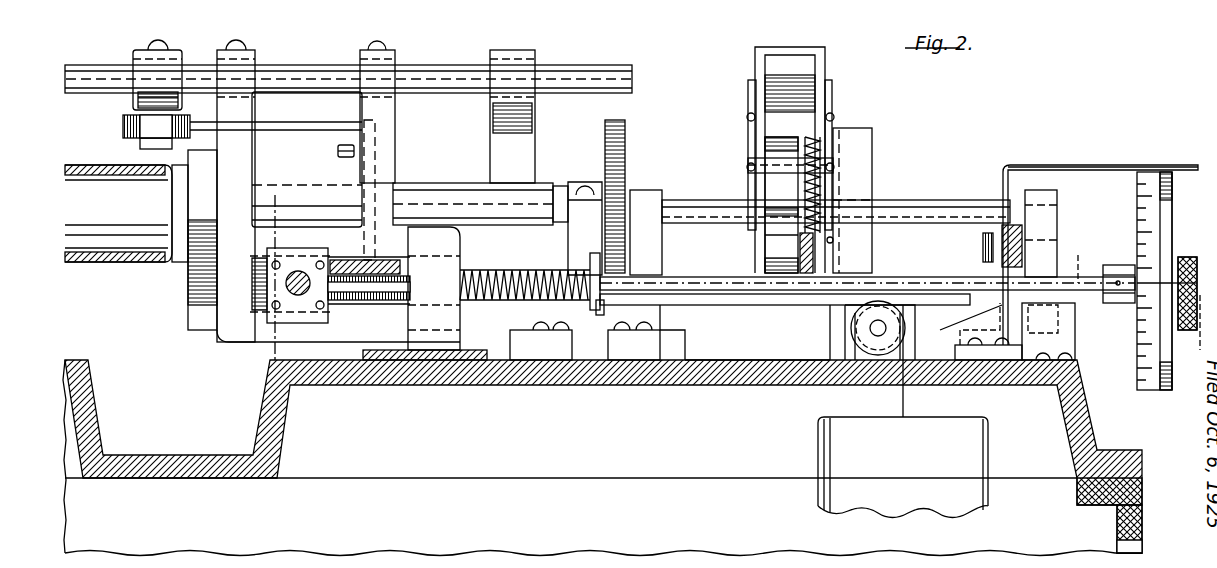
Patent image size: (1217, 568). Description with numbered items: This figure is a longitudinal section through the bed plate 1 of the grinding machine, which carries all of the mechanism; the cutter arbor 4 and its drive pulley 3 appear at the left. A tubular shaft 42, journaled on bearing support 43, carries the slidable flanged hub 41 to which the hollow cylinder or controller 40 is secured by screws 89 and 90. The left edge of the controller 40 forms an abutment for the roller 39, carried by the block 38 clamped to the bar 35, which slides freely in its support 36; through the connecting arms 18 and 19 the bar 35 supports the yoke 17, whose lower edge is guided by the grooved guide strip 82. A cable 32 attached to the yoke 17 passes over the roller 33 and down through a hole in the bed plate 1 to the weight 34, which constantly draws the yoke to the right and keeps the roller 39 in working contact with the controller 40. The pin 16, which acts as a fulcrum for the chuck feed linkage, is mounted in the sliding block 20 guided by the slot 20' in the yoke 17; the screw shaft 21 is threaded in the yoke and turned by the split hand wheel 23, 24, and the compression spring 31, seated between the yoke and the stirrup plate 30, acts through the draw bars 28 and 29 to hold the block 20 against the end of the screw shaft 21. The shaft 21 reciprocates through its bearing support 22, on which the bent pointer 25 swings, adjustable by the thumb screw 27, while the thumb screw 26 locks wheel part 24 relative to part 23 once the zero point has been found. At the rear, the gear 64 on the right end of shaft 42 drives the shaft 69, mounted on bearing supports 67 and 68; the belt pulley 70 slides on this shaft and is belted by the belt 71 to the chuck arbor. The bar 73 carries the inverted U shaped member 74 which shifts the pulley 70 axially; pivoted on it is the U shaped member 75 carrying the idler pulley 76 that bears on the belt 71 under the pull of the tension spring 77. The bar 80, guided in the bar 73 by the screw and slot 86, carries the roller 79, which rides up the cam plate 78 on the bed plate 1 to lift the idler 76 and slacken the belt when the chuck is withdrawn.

The bed plate 1 is at (100, 355).
The pulley 3 is at (274, 272).
The arbor 4 is at (1137, 302).
The pin 16 is at (302, 275).
The yoke 17 is at (382, 222).
The connecting arm 18 is at (394, 52).
The connecting arm 19 is at (252, 52).
The sliding block 20 is at (324, 246).
The slot 20' is at (430, 288).
The screw shaft 21 is at (926, 280).
The bearing support 22 is at (1022, 345).
The hand wheel part 23 is at (1145, 392).
The hand wheel part 24 is at (1170, 392).
The pointer 25 is at (1160, 165).
The thumb screw 26 is at (1188, 257).
The thumb screw 27 is at (983, 243).
The draw bar 28 is at (593, 262).
The draw bar 29 is at (525, 310).
The stirrup plate 30 is at (598, 315).
The compression spring 31 is at (472, 270).
The cable 32 is at (785, 327).
The roller 33 is at (898, 340).
The weight 34 is at (903, 411).
The bar 35 is at (625, 68).
The support 36 is at (535, 55).
The block 38 is at (140, 52).
The roller 39 is at (123, 126).
The hollow cylinder 40 is at (300, 128).
The flanged hub 41 is at (376, 155).
The tubular shaft 42 is at (126, 213).
The bearing support 43 is at (634, 341).
The gear 64 is at (620, 170).
The bearing support 67 is at (662, 257).
The bearing support 68 is at (1057, 200).
The shaft 69 is at (934, 203).
The belt pulley 70 is at (768, 235).
The belt 71 is at (755, 200).
The bar 73 is at (800, 256).
The inverted U shaped member 74 is at (790, 55).
The U shaped member 75 is at (833, 82).
The idler pulley 76 is at (765, 145).
The tension spring 77 is at (828, 200).
The cam plate 78 is at (981, 331).
The roller 79 is at (850, 328).
The bar 80 is at (873, 264).
The grooved guide strip 82 is at (420, 360).
The screw and slot 86 is at (835, 240).
The screw 89 is at (338, 152).
The screw 90 is at (375, 275).